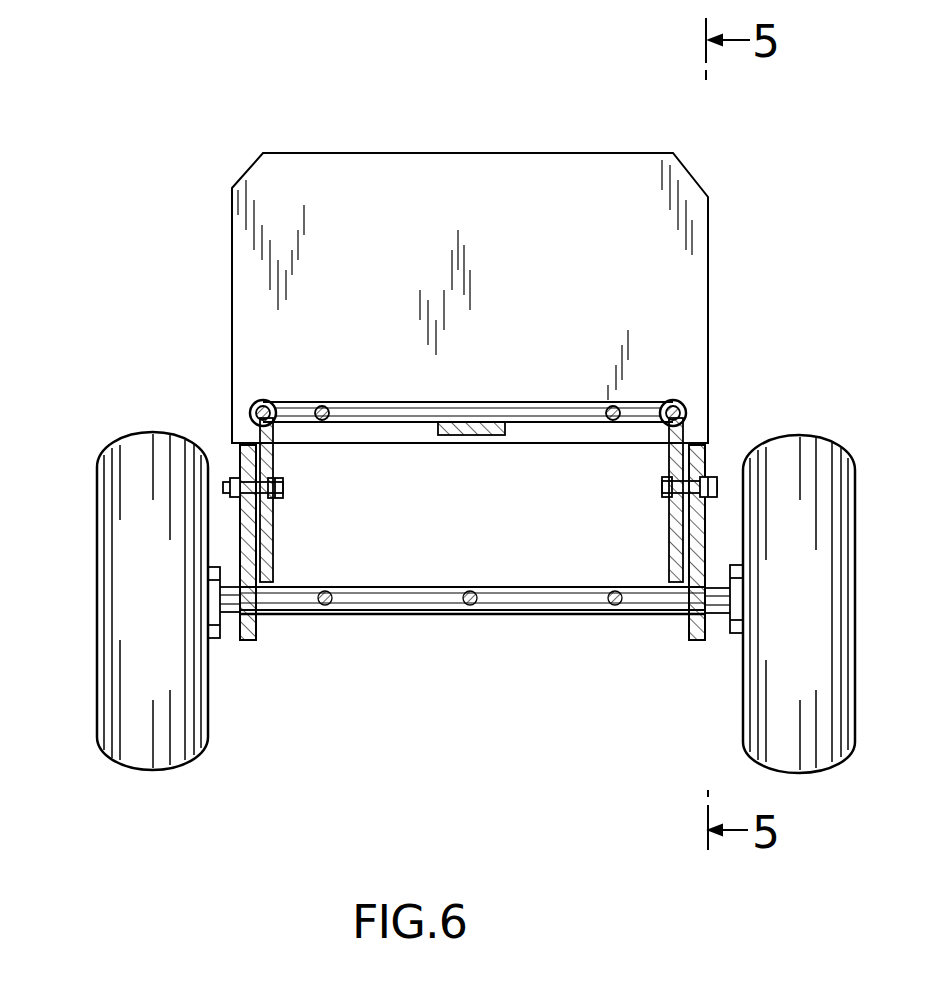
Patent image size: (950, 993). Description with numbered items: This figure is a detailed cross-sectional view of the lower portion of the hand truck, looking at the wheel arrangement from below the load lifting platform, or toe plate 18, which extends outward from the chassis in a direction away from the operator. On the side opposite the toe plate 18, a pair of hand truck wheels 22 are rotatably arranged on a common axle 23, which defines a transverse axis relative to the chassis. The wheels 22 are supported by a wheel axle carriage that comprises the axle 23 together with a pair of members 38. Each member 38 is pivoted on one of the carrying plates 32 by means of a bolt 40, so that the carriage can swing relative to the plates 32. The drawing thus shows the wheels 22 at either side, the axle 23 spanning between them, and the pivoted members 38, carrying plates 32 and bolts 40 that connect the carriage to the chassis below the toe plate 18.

The toe plate 18 is at (582, 168).
The hand truck wheels 22 is at (107, 525).
The axle 23 is at (535, 597).
The carrying plates 32 is at (277, 533).
The members 38 is at (262, 628).
The bolt 40 is at (285, 482).